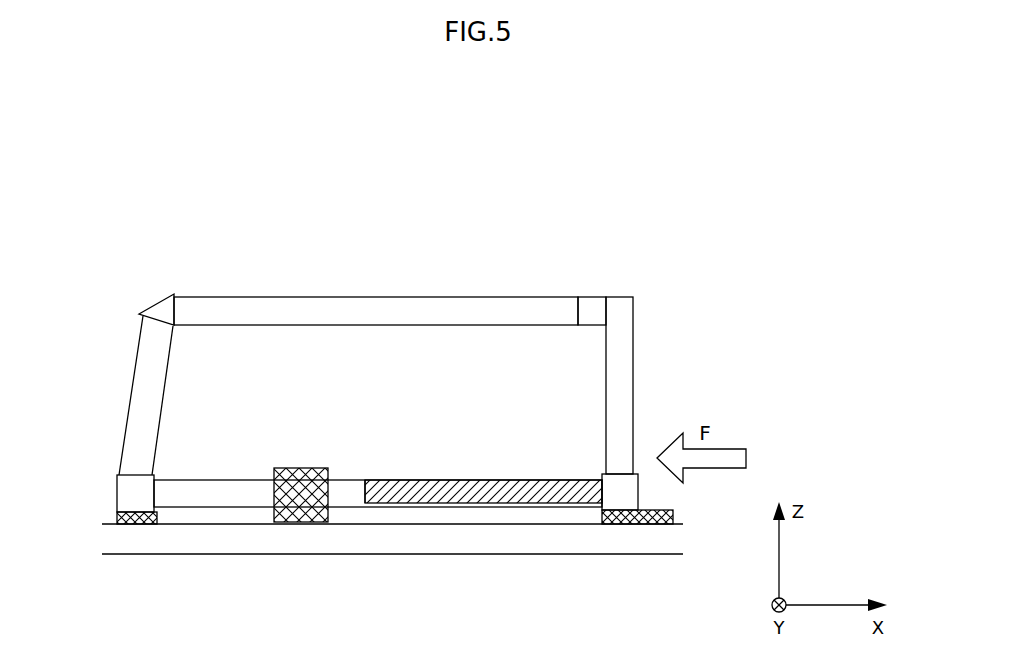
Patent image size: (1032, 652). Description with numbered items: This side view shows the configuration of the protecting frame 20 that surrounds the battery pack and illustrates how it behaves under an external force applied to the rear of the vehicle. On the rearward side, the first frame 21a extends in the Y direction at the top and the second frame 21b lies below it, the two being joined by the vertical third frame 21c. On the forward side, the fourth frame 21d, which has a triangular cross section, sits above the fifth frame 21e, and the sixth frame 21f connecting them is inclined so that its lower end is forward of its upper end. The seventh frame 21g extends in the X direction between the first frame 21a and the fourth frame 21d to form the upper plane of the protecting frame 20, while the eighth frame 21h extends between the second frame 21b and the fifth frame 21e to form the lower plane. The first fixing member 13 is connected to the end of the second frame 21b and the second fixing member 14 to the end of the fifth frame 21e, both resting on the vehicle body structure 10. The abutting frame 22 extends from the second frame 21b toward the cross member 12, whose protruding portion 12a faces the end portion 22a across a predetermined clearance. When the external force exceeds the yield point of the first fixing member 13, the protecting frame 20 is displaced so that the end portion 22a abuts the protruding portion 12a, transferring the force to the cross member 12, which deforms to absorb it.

The base plate 10 is at (442, 540).
The cross member 12 is at (313, 465).
The protruding portion 12a is at (303, 485).
The first fixing member 13 is at (628, 520).
The second fixing member 14 is at (130, 520).
The protecting frame 20 is at (486, 280).
The first frame 21a is at (594, 310).
The second frame 21b is at (628, 489).
The third frame 21c is at (622, 376).
The fourth frame 21d is at (162, 312).
The fifth frame 21e is at (134, 497).
The sixth frame 21f is at (147, 396).
The seventh frame 21g is at (382, 312).
The eighth frame 21h is at (220, 490).
The abutting frame 22 is at (481, 492).
The end portion of abutting frame 22a is at (365, 496).